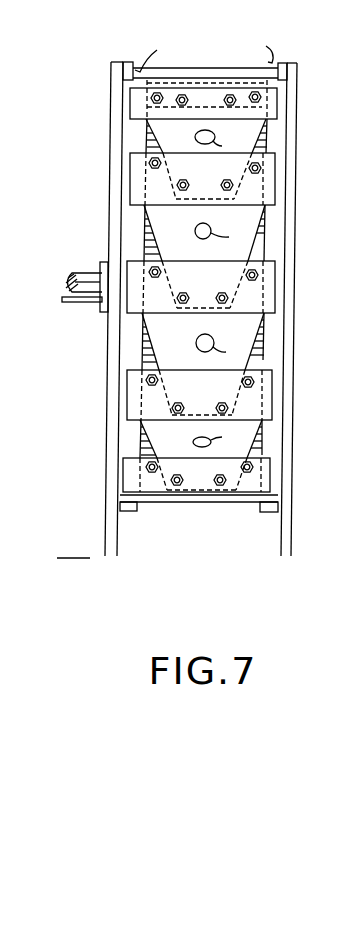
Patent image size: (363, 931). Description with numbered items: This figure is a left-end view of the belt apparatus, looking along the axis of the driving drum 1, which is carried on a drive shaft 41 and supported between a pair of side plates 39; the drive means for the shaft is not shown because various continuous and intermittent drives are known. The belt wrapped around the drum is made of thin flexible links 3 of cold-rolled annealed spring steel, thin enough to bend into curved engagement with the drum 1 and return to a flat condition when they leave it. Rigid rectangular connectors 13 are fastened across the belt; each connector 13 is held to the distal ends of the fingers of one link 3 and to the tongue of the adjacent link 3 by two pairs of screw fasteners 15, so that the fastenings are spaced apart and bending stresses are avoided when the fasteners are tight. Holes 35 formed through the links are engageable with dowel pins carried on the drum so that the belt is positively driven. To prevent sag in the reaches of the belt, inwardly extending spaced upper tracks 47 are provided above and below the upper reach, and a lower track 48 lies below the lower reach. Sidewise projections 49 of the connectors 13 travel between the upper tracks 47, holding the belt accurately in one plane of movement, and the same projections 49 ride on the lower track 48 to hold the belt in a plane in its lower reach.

The drum 1 is at (142, 345).
The link 3 is at (171, 139).
The connector 13 is at (214, 82).
The screw fastener 15 is at (226, 178).
The hole 35 is at (220, 288).
The side plate 39 is at (110, 208).
The drive shaft 41 is at (83, 268).
The upper track 47 is at (204, 55).
The lower track 48 is at (128, 512).
The sidewise projection 49 is at (126, 72).